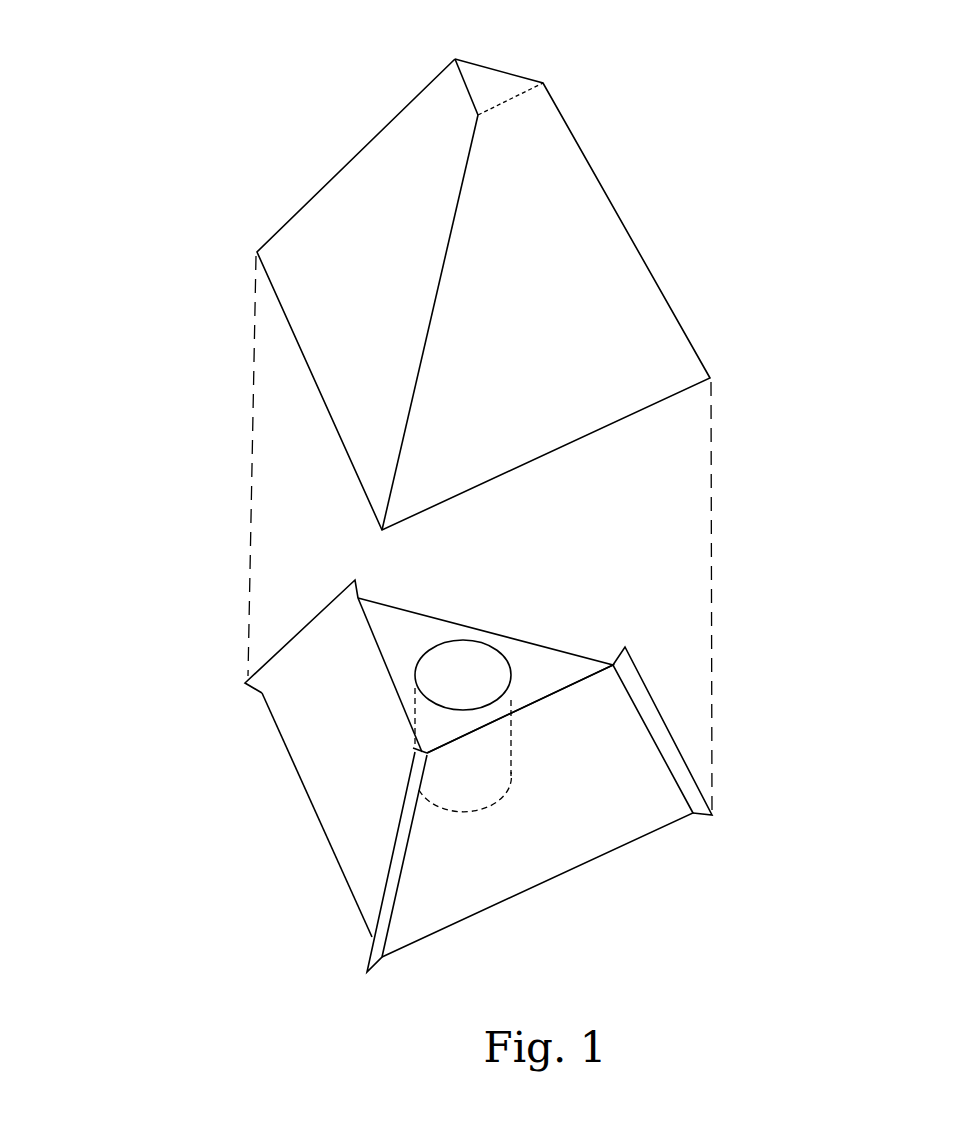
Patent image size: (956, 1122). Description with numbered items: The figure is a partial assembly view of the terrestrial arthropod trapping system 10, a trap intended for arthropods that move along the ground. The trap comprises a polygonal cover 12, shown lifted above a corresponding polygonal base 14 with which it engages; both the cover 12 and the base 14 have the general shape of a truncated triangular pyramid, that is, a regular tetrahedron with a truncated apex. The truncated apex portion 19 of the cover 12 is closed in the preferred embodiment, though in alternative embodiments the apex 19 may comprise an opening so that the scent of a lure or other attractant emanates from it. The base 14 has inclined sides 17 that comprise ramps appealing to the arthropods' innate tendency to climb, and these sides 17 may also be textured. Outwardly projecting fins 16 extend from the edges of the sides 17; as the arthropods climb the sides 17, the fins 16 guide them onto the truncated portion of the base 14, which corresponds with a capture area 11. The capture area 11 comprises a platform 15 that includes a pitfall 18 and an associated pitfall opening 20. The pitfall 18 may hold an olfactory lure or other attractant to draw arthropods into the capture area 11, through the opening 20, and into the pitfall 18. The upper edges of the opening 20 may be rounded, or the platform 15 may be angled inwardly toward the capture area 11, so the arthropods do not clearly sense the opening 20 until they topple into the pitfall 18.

The terrestrial arthropod trapping system 10 is at (145, 166).
The capture area 11 is at (383, 626).
The polygonal cover 12 is at (545, 252).
The polygonal base 14 is at (334, 742).
The platform 15 is at (405, 633).
The outwardly projecting fins 16 is at (293, 638).
The sides 17 is at (335, 798).
The pitfall 18 is at (477, 677).
The truncated apex portion 19 is at (490, 85).
The pitfall opening 20 is at (485, 630).